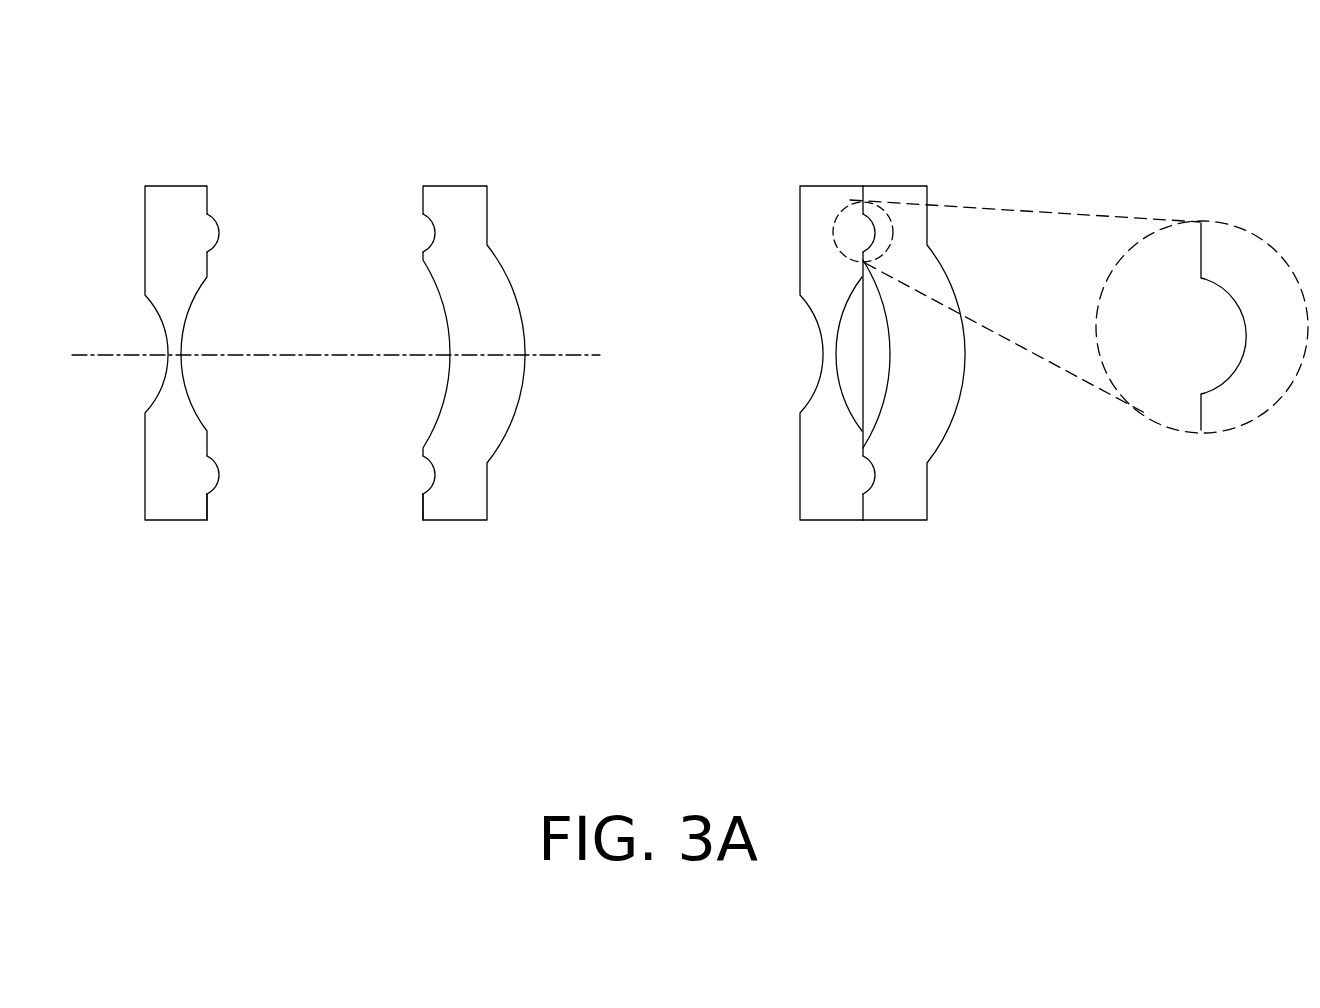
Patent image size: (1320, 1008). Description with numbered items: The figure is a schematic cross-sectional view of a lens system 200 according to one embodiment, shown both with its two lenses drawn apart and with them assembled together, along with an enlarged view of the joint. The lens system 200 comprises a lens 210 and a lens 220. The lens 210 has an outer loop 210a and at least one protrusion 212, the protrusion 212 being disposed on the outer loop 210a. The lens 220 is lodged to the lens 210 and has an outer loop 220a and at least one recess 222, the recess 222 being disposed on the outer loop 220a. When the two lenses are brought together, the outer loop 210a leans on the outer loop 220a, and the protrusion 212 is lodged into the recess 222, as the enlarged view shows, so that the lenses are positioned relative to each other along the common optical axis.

The lens system 200 is at (574, 729).
The lens 210 is at (175, 510).
The outer loop 210a is at (208, 506).
The protrusion 212 is at (213, 222).
The lens 220 is at (455, 510).
The outer loop 220a is at (422, 506).
The recess 222 is at (435, 233).